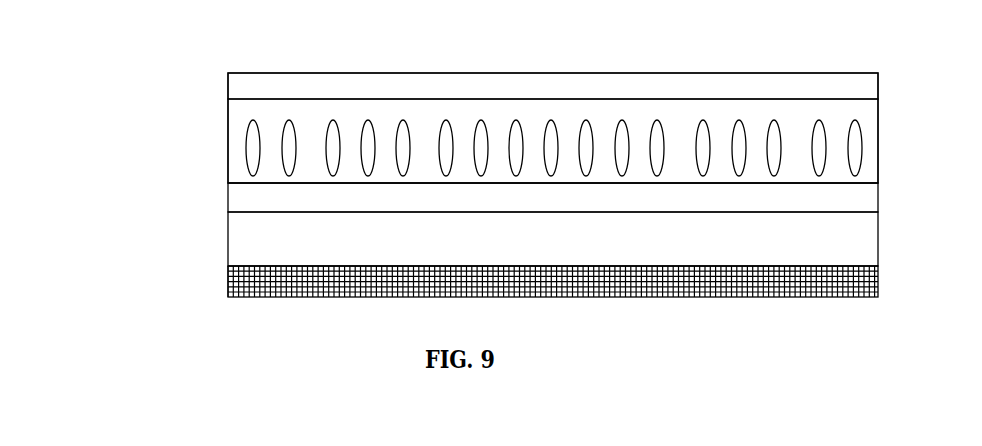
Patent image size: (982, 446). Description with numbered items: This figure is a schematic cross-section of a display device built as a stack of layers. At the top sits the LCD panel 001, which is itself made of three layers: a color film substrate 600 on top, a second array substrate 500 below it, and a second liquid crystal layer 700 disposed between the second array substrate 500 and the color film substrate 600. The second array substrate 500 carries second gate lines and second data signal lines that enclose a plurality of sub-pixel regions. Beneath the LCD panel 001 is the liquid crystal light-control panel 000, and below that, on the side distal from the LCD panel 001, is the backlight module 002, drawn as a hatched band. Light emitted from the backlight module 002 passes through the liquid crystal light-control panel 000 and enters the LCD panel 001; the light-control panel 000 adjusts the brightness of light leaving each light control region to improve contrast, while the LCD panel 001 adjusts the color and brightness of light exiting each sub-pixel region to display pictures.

The LCD panel 001 is at (107, 83).
The color film substrate 600 is at (228, 85).
The second liquid crystal layer 700 is at (228, 131).
The second array substrate 500 is at (228, 193).
The liquid crystal light-control panel 000 is at (228, 244).
The backlight module 002 is at (241, 283).